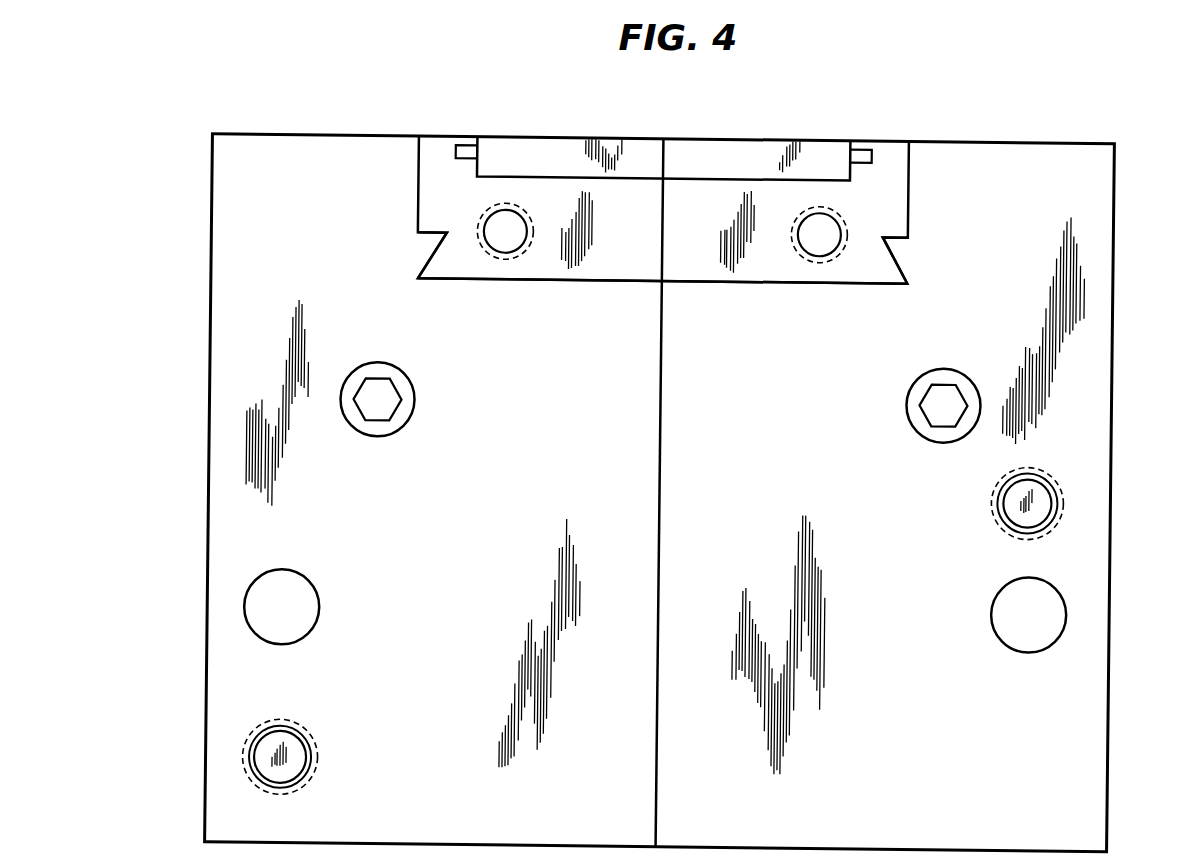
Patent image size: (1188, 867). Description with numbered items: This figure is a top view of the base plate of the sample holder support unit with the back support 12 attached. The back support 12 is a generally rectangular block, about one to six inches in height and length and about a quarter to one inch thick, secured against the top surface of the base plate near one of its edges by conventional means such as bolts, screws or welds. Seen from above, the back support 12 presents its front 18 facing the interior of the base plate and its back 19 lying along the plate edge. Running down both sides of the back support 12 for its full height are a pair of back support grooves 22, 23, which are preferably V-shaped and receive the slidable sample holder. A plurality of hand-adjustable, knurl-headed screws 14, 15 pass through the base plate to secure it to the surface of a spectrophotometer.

The back support 12 is at (872, 175).
The hand-adjustable knurl-headed screw 14 is at (270, 756).
The hand-adjustable knurl-headed screw 15 is at (1040, 498).
The front 18 is at (611, 281).
The back 19 is at (552, 139).
The back support groove 22 is at (410, 254).
The back support groove 23 is at (906, 254).